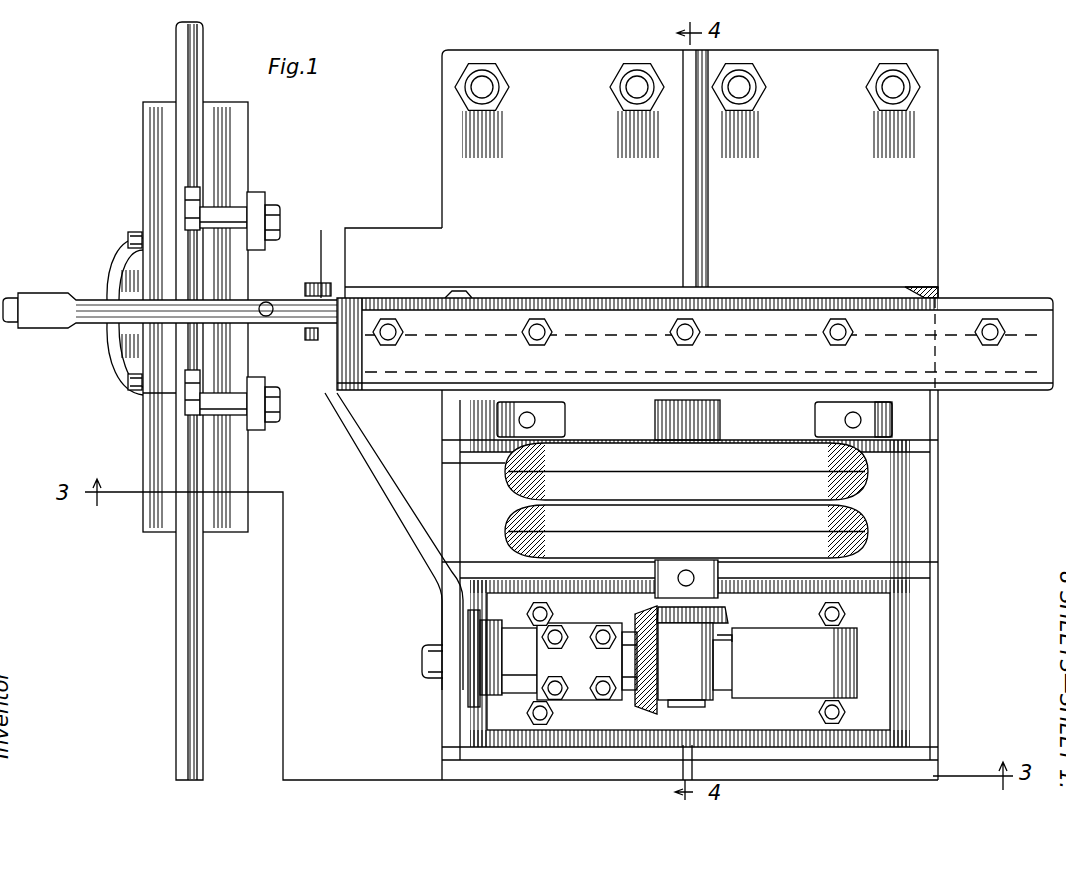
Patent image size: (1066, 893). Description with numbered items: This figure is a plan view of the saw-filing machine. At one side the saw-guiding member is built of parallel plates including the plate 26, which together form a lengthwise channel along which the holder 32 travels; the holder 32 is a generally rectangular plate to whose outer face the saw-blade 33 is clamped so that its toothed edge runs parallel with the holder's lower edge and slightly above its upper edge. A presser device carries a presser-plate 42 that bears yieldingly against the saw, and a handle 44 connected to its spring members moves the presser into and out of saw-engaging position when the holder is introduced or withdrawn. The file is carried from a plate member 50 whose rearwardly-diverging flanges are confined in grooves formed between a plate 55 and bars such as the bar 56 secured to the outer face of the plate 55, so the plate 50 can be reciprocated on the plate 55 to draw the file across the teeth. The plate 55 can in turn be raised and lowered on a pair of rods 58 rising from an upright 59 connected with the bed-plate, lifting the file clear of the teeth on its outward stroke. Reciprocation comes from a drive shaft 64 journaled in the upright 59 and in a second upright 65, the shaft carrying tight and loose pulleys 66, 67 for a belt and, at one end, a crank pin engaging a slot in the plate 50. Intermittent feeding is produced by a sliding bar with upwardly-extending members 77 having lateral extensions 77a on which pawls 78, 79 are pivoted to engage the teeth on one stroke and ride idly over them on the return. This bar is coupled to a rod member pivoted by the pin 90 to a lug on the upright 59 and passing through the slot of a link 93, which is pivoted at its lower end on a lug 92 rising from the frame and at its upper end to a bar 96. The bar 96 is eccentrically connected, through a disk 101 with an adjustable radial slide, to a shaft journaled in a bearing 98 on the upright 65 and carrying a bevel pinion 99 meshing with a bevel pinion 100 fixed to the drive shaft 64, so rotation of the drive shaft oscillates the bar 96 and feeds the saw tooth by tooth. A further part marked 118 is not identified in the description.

The plate 26 is at (176, 737).
The holder 32 is at (203, 740).
The saw-blade 33 is at (192, 708).
The presser-plate 42 is at (195, 317).
The handle 44 is at (118, 343).
The plate member 50 is at (293, 300).
The plate 55 is at (695, 344).
The bar 56 is at (572, 305).
The rods 58 is at (535, 419).
The upright 59 is at (890, 424).
The drive shaft 64 is at (700, 704).
The upright 65 is at (785, 663).
The tight pulley 66 is at (686, 531).
The loose pulley 67 is at (686, 471).
The upwardly-extending members 77 is at (262, 215).
The lateral extensions 77a is at (237, 215).
The pawl 78 is at (190, 400).
The pawl 79 is at (192, 200).
The pivot pin 90 is at (460, 297).
The lug 92 is at (346, 283).
The link 93 is at (312, 339).
The bar 96 is at (384, 496).
The bearing 98 is at (569, 664).
The bevel pinion 99 is at (648, 698).
The bevel pinion 100 is at (722, 620).
The disk 101 is at (478, 690).
The shaft 118 is at (46, 306).